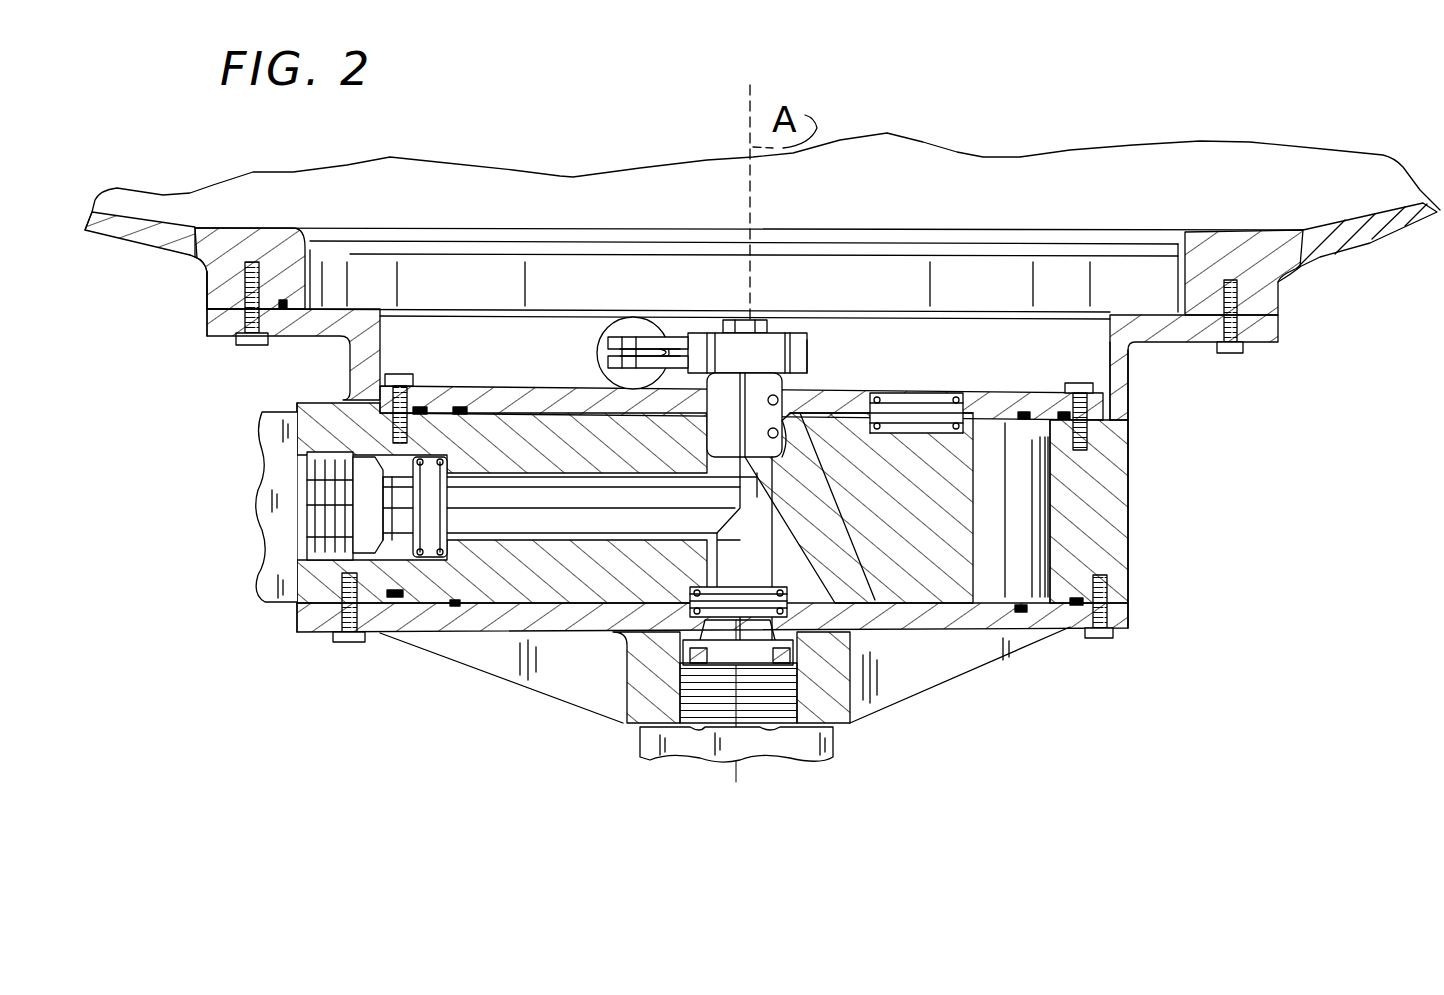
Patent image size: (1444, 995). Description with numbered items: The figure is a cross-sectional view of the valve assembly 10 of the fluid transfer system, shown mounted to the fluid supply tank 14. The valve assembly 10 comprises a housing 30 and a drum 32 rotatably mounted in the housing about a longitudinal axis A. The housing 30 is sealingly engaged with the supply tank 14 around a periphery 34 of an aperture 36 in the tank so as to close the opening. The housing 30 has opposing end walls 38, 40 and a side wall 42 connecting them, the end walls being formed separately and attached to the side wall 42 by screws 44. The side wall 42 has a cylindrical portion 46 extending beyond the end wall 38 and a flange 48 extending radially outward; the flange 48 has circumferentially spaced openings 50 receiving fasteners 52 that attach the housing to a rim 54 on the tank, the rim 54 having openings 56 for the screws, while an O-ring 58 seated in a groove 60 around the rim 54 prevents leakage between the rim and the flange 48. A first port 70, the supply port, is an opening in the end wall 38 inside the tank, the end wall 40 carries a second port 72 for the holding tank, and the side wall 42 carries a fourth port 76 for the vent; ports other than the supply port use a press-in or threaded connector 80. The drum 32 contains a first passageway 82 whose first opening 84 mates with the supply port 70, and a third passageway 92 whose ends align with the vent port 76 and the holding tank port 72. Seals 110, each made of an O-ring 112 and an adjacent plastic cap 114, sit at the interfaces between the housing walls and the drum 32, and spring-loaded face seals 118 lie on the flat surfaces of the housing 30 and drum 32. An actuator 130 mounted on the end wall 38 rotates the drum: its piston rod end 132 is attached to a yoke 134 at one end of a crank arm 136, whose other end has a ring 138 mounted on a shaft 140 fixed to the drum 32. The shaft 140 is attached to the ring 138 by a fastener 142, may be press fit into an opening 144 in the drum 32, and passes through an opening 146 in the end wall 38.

The valve assembly 10 is at (1152, 507).
The fluid supply tank 14 is at (1357, 247).
The housing 30 is at (1130, 572).
The drum 32 is at (607, 548).
The periphery 34 is at (205, 327).
The aperture 36 is at (1172, 293).
The end wall 38 is at (1000, 390).
The end wall 40 is at (962, 610).
The side wall 42 is at (1103, 470).
The screws 44 is at (437, 340).
The cylindrical portion 46 is at (1120, 377).
The flange 48 is at (1263, 327).
The openings 50 is at (263, 306).
The fasteners 52 is at (237, 337).
The rim 54 is at (1200, 262).
The openings 56 is at (1210, 265).
The O-ring 58 is at (267, 293).
The groove 60 is at (283, 300).
The first port 70 is at (947, 393).
The second port 72 is at (765, 697).
The fourth port 76 is at (327, 470).
The connector 80 is at (697, 690).
The first passageway 82 is at (855, 605).
The first opening 84 is at (965, 430).
The third passageway 92 is at (580, 540).
The seals 110 is at (430, 562).
The O-ring 112 is at (360, 455).
The plastic cap 114 is at (455, 560).
The face seals 118 is at (420, 407).
The actuator 130 is at (610, 327).
The piston rod end 132 is at (613, 360).
The yoke 134 is at (667, 340).
The crank arm 136 is at (668, 350).
The ring 138 is at (793, 347).
The shaft 140 is at (770, 367).
The fastener 142 is at (753, 320).
The opening 144 is at (827, 393).
The opening 146 is at (800, 375).